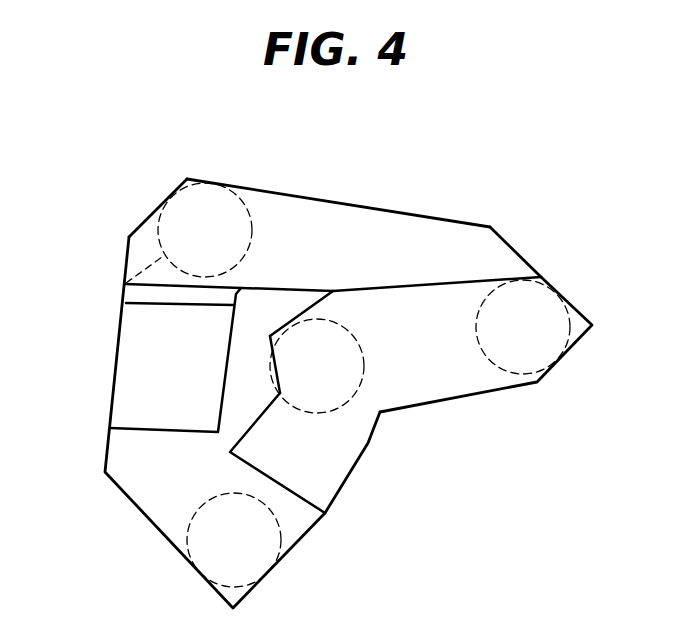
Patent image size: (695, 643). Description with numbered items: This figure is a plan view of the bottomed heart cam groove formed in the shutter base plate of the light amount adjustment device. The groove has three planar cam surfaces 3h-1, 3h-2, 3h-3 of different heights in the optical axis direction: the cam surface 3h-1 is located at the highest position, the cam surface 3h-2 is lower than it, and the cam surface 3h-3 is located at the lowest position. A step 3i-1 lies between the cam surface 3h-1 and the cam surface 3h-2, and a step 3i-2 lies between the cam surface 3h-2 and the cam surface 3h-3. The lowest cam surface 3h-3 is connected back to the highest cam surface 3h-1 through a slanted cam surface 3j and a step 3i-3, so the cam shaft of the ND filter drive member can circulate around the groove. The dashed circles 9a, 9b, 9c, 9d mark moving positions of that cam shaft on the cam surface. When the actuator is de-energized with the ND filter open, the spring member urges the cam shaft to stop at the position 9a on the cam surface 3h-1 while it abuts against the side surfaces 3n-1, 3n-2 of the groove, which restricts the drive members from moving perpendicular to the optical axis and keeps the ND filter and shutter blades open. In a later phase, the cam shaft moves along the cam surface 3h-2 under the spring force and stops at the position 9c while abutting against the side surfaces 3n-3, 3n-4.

The side surface 3n-1 is at (238, 192).
The side surface 3n-2 is at (147, 228).
The side surface 3n-3 is at (278, 337).
The side surface 3n-4 is at (283, 394).
The cam surface 3h-1 is at (357, 242).
The cam surface 3h-2 is at (433, 353).
The cam surface 3h-3 is at (162, 497).
The step 3i-1 is at (480, 278).
The step 3i-2 is at (292, 488).
The step 3i-3 is at (188, 288).
The slanted cam surface 3j is at (178, 370).
The stop position 9a is at (126, 283).
The moving position 9b is at (572, 327).
The stop position 9c is at (363, 370).
The moving position 9d is at (280, 533).